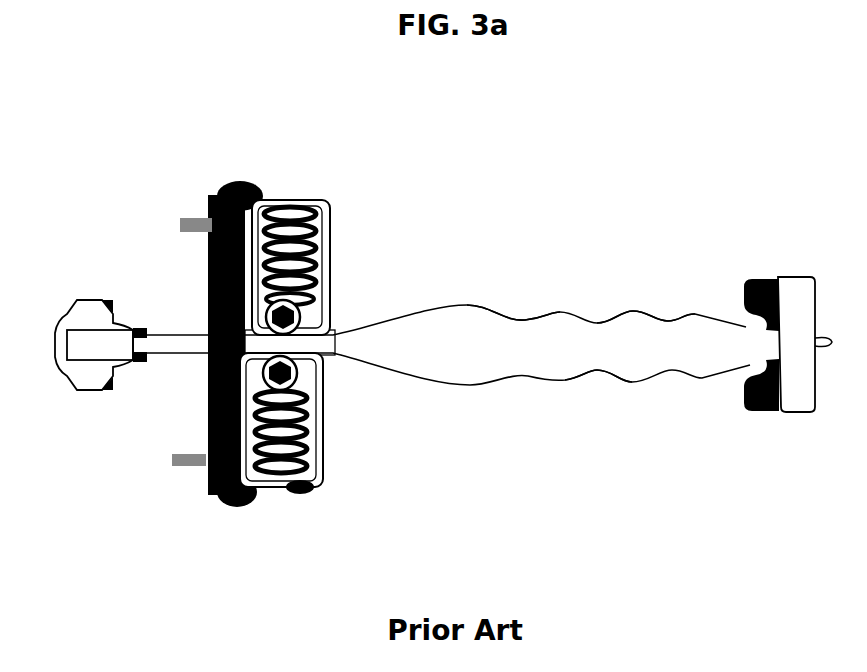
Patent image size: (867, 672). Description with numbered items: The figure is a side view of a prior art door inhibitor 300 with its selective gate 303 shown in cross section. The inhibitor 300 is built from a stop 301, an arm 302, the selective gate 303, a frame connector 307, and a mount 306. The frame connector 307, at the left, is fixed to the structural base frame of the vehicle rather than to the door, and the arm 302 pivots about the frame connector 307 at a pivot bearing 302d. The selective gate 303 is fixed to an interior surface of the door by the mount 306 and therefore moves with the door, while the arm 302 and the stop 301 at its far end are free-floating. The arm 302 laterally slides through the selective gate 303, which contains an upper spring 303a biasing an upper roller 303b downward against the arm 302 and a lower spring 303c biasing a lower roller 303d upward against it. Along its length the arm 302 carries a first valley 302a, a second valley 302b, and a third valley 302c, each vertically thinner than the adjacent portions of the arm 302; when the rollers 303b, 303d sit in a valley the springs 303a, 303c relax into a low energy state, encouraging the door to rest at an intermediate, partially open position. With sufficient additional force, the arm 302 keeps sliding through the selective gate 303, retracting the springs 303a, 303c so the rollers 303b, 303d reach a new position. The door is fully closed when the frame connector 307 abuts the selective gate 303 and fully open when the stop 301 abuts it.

The inhibitor 300 is at (722, 110).
The stop 301 is at (800, 273).
The arm 302 is at (696, 390).
The first valley 302a is at (690, 313).
The second valley 302b is at (597, 372).
The third valley 302c is at (531, 318).
The pivot bearing 302d is at (85, 345).
The selective gate 303 is at (279, 493).
The upper spring 303a is at (290, 200).
The upper roller 303b is at (293, 302).
The lower spring 303c is at (300, 458).
The lower roller 303d is at (289, 388).
The mount 306 is at (200, 478).
The frame connector 307 is at (66, 386).